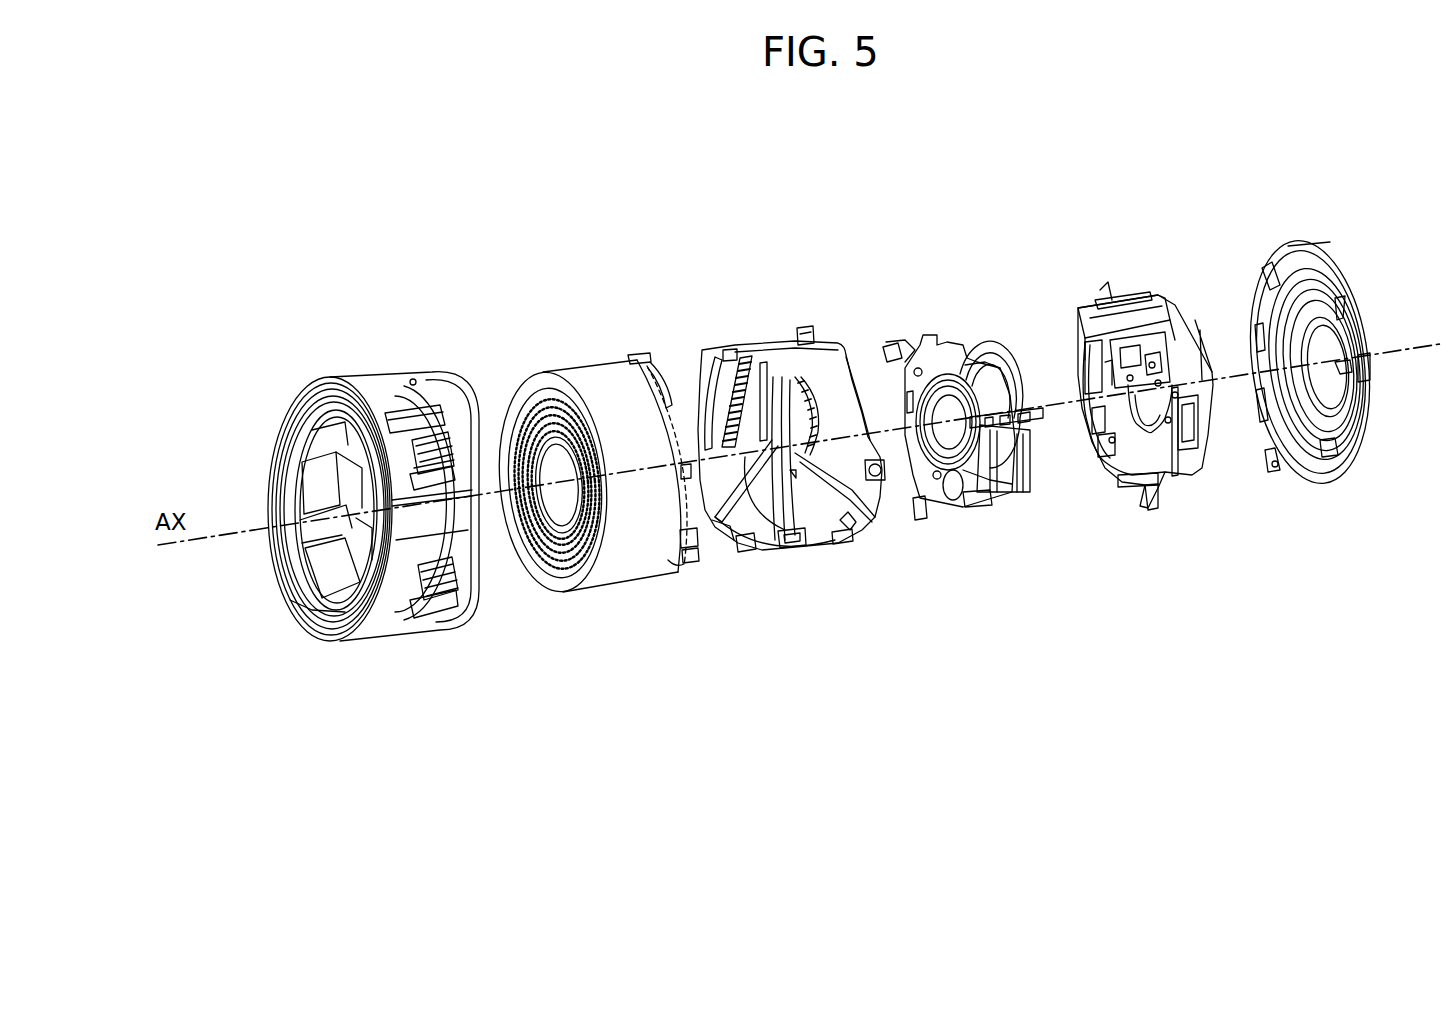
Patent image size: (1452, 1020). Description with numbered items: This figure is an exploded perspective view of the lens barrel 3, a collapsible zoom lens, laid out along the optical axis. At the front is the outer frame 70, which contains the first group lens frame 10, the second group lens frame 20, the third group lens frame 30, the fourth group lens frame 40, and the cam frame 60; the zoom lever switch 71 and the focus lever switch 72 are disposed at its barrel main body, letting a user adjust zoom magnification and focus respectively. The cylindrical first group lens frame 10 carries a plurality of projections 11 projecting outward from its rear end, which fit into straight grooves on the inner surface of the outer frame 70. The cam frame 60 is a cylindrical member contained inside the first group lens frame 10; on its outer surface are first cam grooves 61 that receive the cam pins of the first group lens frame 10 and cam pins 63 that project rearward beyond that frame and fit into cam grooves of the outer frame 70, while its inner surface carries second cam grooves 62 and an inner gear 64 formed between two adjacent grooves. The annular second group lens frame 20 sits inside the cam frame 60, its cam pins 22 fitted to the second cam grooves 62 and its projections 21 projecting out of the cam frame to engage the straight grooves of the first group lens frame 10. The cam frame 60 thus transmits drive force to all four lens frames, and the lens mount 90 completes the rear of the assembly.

The lens barrel 3 is at (326, 230).
The first group lens frame 10 is at (588, 368).
The projections 11 is at (635, 360).
The second group lens frame 20 is at (925, 335).
The projections 21 is at (888, 345).
The cam pins 22 is at (1043, 413).
The third group lens frame 30 is at (1037, 506).
The fourth group lens frame 40 is at (1136, 298).
The cam frame 60 is at (768, 350).
The first cam grooves 61 is at (842, 540).
The second cam grooves 62 is at (738, 540).
The cam pins 63 is at (798, 330).
The inner gear 64 is at (735, 385).
The outer frame 70 is at (382, 382).
The zoom lever switch 71 is at (455, 476).
The focus lever switch 72 is at (455, 590).
The lens mount 90 is at (1297, 240).